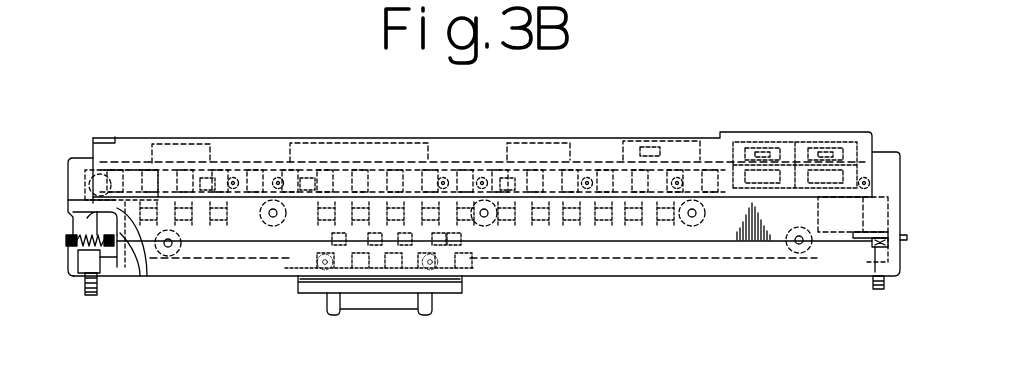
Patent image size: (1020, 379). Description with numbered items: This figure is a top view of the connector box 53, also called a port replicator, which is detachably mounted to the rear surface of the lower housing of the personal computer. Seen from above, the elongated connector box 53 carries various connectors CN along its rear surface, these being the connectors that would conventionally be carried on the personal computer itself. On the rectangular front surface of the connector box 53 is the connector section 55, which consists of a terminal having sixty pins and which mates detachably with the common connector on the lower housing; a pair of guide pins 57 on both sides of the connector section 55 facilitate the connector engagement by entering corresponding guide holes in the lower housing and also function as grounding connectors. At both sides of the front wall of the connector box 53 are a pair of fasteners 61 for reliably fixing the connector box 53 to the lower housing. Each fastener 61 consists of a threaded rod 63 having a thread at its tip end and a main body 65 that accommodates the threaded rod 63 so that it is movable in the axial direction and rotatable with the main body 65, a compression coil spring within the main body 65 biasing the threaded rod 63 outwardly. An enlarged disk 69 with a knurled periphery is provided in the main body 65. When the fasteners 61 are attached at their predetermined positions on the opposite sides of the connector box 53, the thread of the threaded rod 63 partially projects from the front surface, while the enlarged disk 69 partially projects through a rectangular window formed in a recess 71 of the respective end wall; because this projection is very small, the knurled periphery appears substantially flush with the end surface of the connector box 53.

The connector box 53 is at (593, 131).
The connectors CN is at (520, 152).
The connector section 55 is at (455, 285).
The guide pins 57 is at (327, 313).
The fastener 61 is at (84, 288).
The threaded rod 63 is at (98, 292).
The main body 65 is at (124, 268).
The enlarged disk 69 is at (66, 242).
The recess 71 is at (68, 215).